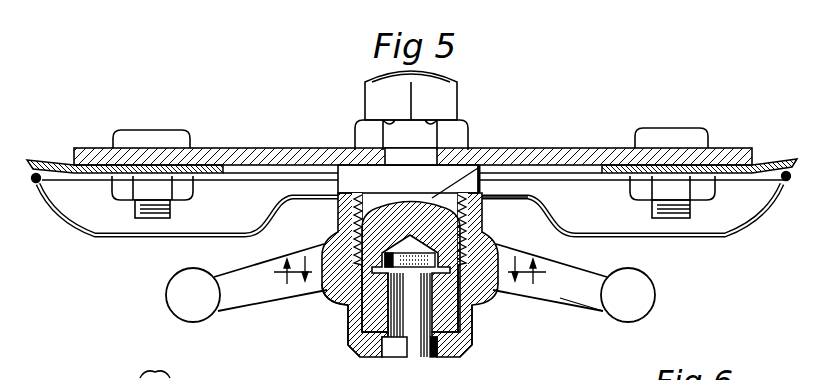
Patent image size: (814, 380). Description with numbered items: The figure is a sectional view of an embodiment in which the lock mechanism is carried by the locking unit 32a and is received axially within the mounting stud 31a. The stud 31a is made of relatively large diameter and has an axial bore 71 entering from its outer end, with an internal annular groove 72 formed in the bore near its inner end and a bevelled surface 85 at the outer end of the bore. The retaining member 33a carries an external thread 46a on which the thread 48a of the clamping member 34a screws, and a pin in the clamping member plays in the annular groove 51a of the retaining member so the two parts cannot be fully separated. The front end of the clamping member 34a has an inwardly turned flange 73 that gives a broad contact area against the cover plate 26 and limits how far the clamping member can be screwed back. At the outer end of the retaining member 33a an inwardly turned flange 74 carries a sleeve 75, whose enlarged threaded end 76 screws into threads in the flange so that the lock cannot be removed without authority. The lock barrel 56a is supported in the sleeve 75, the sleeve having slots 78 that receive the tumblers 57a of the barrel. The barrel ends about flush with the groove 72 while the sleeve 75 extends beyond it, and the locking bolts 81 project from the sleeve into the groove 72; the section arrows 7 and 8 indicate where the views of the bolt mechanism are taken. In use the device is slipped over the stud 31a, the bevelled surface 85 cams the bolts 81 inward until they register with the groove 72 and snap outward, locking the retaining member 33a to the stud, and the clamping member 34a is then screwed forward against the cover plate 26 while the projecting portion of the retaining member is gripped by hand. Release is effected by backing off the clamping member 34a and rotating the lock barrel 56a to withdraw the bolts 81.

The cover plate 26 is at (170, 236).
The mounting stud 31a is at (503, 142).
The inwardly turned flange 73 is at (483, 187).
The tumblers 57a is at (427, 212).
The thread 48a is at (340, 218).
The clamping member 34a is at (470, 204).
The internal annular groove 72 is at (477, 230).
The direction arrows 7 is at (410, 264).
The handle 8 is at (410, 283).
The locking bolts 81 is at (566, 298).
The external thread 46a is at (528, 238).
The annular groove 51a is at (341, 295).
The locking unit 32a is at (345, 322).
The lock barrel 56a is at (372, 332).
The inwardly turned flange 74 is at (355, 352).
The bevelled surface 85 is at (386, 348).
The slots 78 is at (395, 325).
The enlarged threaded end 76 is at (437, 355).
The sleeve 75 is at (462, 298).
The retaining member 33a is at (463, 313).
The axial bore 71 is at (467, 332).